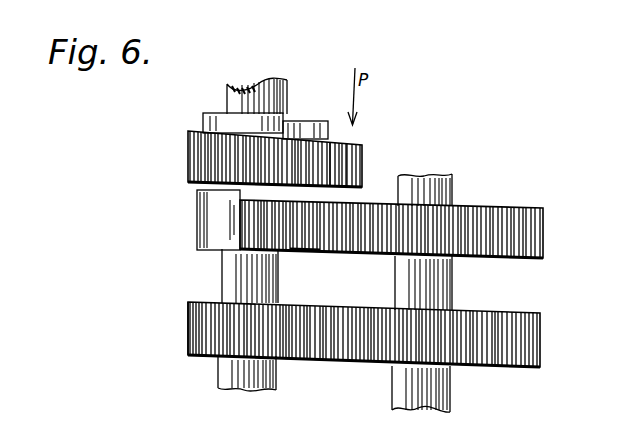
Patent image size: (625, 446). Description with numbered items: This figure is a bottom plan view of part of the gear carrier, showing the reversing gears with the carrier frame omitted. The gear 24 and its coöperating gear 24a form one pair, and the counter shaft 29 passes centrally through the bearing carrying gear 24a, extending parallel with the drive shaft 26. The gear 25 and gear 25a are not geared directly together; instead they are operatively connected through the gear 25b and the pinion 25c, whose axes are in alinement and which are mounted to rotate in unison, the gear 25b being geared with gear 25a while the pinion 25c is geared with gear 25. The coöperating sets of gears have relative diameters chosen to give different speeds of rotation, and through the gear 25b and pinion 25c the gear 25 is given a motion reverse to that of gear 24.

The gear 24 is at (465, 359).
The gear 24a is at (188, 356).
The gear 25 is at (480, 214).
The gear 25a is at (198, 146).
The gear 25b is at (362, 153).
The pinion 25c is at (302, 250).
The drive shaft 26 is at (446, 282).
The counter shaft 29 is at (228, 275).